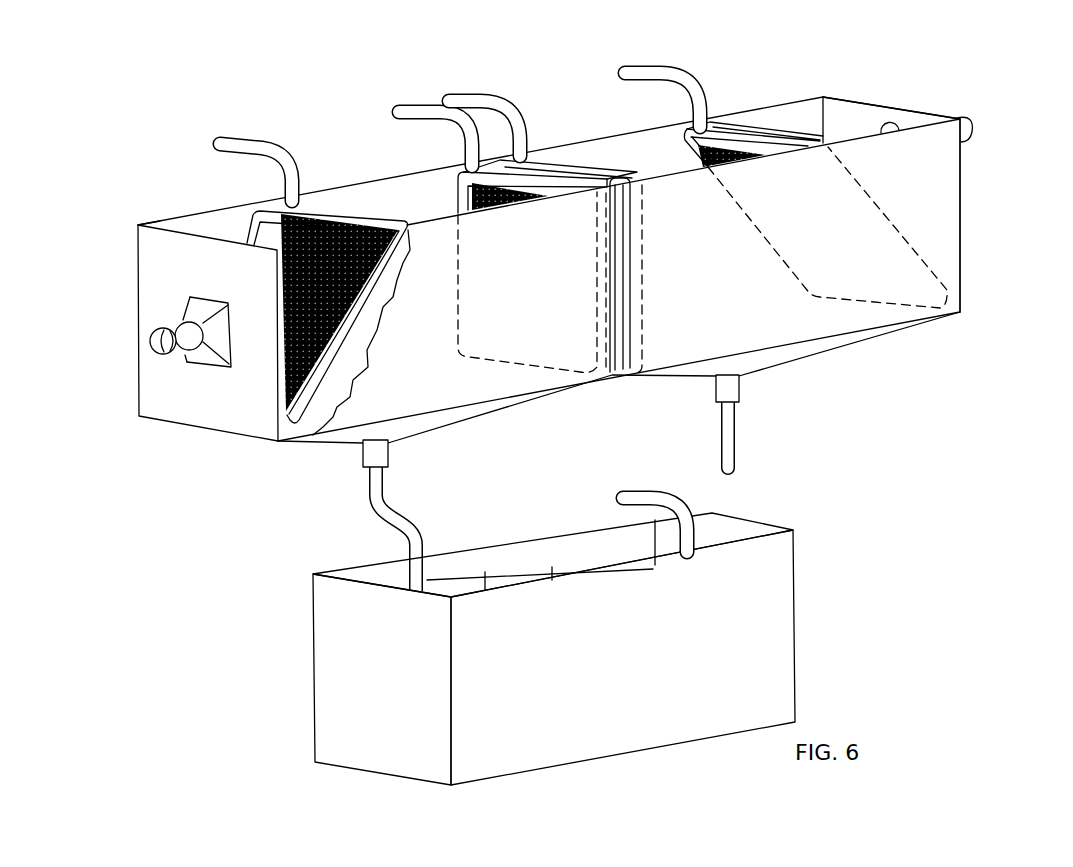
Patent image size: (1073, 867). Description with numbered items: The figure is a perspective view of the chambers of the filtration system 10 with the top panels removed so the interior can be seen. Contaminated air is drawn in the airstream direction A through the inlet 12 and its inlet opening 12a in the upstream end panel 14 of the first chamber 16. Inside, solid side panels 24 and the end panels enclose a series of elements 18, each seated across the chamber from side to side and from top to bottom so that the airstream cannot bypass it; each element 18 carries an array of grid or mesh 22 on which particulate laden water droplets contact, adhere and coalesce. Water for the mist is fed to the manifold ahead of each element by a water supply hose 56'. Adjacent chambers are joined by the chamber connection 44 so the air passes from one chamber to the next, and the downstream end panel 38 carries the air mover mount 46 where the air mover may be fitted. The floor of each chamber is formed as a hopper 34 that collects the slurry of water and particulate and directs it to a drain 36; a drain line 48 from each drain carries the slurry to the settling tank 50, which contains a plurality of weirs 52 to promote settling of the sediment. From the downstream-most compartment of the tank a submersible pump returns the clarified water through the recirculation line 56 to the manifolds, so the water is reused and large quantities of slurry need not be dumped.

The filtration system 10 is at (295, 107).
The inlet 12 is at (178, 320).
The inlet opening 12a is at (153, 354).
The airstream direction A is at (145, 341).
The upstream end panel 14 is at (252, 406).
The chamber 16 is at (166, 214).
The element 18 is at (273, 200).
The grid or mesh 22 is at (410, 247).
The side panel 24 is at (362, 178).
The hopper 34 is at (332, 442).
The drain 36 is at (388, 453).
The downstream end panel 38 is at (900, 116).
The chamber connection 44 is at (620, 330).
The air mover mount 46 is at (972, 136).
The drain line 48 is at (372, 508).
The settling tank 50 is at (315, 690).
The weir 52 is at (448, 580).
The recirculation line 56 is at (623, 489).
The water supply hose 56' is at (431, 118).